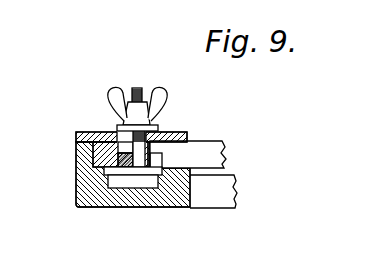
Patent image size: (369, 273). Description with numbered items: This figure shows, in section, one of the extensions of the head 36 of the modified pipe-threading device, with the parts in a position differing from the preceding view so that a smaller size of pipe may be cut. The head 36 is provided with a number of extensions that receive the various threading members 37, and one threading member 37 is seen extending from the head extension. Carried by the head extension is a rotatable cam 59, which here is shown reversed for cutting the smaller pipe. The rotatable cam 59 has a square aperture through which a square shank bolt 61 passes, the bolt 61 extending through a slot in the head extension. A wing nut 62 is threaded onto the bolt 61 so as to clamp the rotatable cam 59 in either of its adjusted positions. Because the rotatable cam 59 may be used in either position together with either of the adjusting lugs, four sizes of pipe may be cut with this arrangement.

The head 36 is at (82, 203).
The threading member 37 is at (212, 155).
The rotatable cam 59 is at (120, 165).
The square shank bolt 61 is at (142, 158).
The wing nut 62 is at (158, 104).